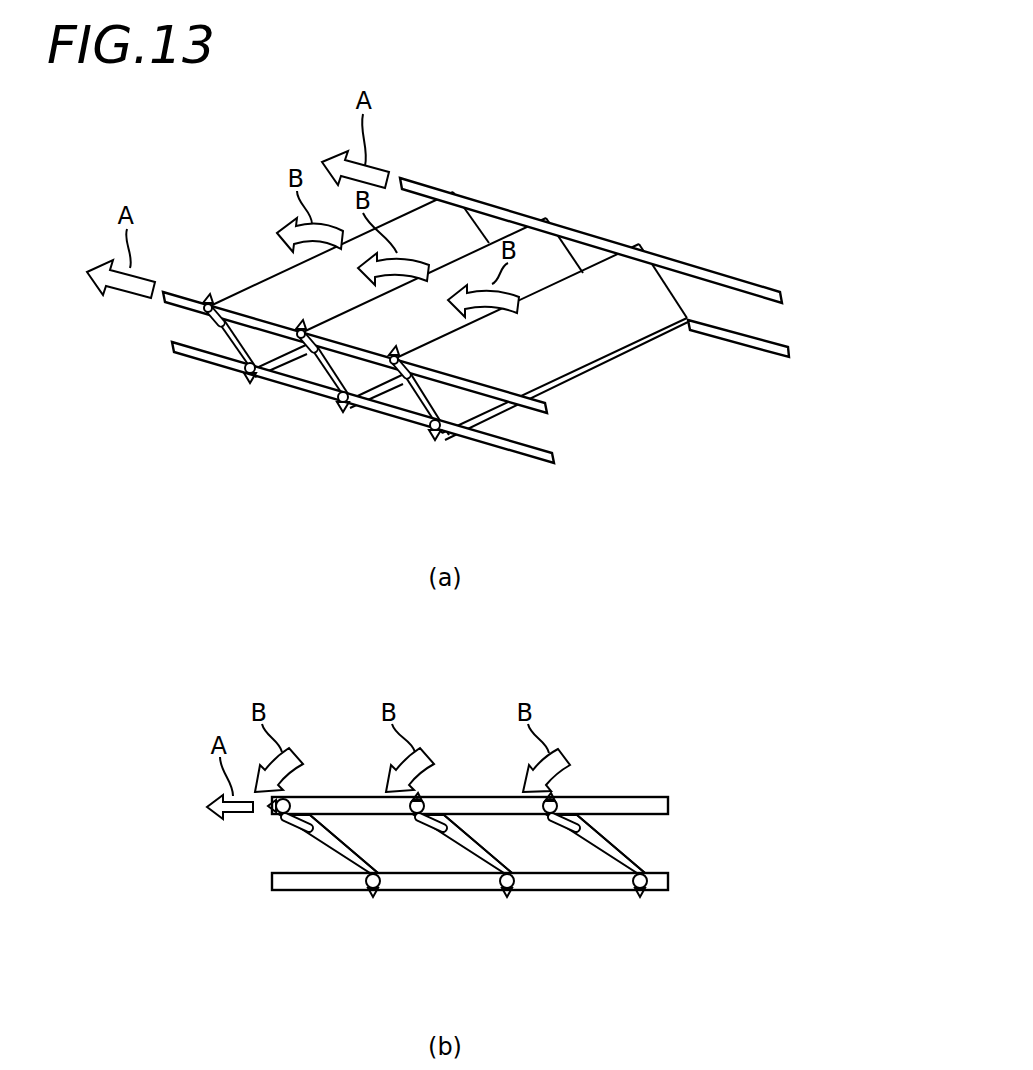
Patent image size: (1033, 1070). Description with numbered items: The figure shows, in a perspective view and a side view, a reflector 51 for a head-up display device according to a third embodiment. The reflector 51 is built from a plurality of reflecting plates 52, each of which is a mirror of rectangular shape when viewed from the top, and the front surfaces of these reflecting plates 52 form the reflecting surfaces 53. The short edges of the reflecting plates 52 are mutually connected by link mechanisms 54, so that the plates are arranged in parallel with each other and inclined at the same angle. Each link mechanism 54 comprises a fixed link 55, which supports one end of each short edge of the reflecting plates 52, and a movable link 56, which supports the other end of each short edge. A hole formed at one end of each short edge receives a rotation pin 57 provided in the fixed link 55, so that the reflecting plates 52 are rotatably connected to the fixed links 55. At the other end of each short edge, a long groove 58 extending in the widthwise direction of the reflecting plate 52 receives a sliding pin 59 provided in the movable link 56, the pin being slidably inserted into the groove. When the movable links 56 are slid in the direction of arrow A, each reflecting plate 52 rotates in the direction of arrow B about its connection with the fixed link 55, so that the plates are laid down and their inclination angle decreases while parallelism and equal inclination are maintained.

The reflector 51 is at (461, 523).
The reflecting plate 52 is at (483, 212).
The reflecting surface 53 is at (420, 217).
The link mechanism 54 is at (481, 564).
The fixed link 55 is at (752, 338).
The movable link 56 is at (768, 290).
The rotation pin 57 is at (248, 382).
The long groove 58 is at (214, 322).
The sliding pin 59 is at (211, 298).